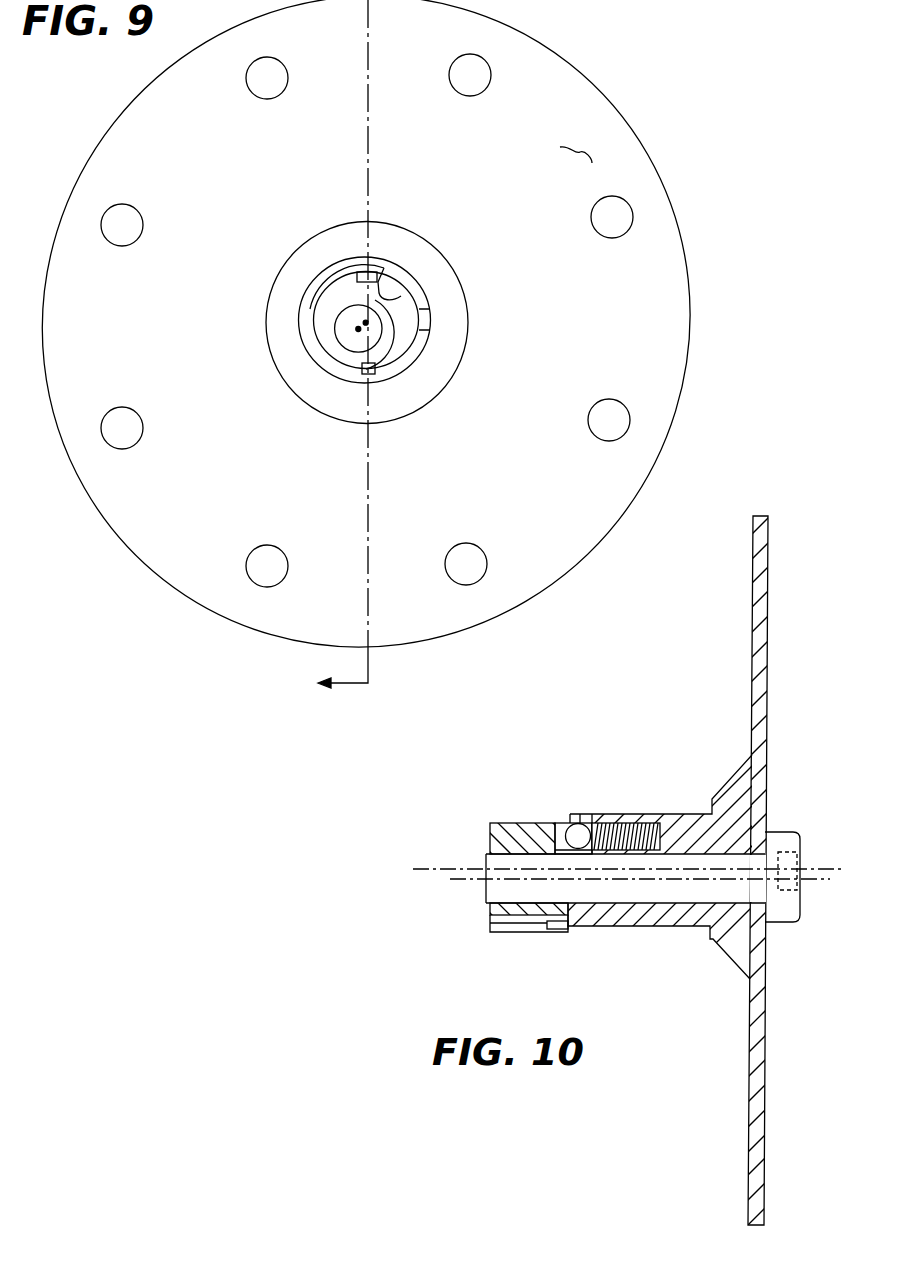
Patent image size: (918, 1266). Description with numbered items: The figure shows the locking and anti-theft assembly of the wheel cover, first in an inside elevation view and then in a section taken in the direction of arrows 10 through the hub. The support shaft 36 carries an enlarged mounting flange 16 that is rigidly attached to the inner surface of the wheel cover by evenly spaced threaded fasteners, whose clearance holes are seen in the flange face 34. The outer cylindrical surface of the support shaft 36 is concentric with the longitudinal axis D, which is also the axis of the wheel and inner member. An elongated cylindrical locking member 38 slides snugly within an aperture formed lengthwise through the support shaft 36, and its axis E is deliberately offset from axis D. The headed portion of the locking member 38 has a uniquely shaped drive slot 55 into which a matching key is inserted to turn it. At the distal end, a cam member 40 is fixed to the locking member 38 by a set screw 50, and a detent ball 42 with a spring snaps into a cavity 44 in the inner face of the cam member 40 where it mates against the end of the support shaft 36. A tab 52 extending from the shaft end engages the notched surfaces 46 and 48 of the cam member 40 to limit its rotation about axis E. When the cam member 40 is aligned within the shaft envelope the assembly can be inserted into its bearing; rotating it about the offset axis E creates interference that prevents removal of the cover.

In FIG. 9, the mounting flange 16 is at (572, 62).
In FIG. 10, the mounting flange 16 is at (752, 615).
In FIG. 9, the plate face 34 is at (588, 152).
In FIG. 10, the plate face 34 is at (748, 1060).
In FIG. 9, the support shaft 36 is at (428, 312).
In FIG. 10, the support shaft 36 is at (690, 813).
In FIG. 9, the locking member 38 is at (351, 342).
In FIG. 10, the locking member 38 is at (673, 926).
In FIG. 9, the cam member 40 is at (311, 356).
In FIG. 10, the cam member 40 is at (518, 823).
In FIG. 10, the detent ball 42 is at (577, 814).
In FIG. 10, the cavity 44 is at (564, 828).
In FIG. 9, the notched surface 46 is at (401, 296).
In FIG. 10, the notched surface 48 is at (501, 925).
In FIG. 9, the set screw 50 is at (375, 272).
In FIG. 9, the tab 52 is at (372, 375).
In FIG. 10, the tab 52 is at (548, 930).
In FIG. 10, the drive slot 55 is at (800, 857).
In FIG. 9, the section arrows 10 is at (329, 672).
In FIG. 9, the longitudinal axis D is at (367, 323).
In FIG. 10, the longitudinal axis D is at (435, 872).
In FIG. 9, the offset axis E is at (356, 329).
In FIG. 10, the offset axis E is at (463, 882).